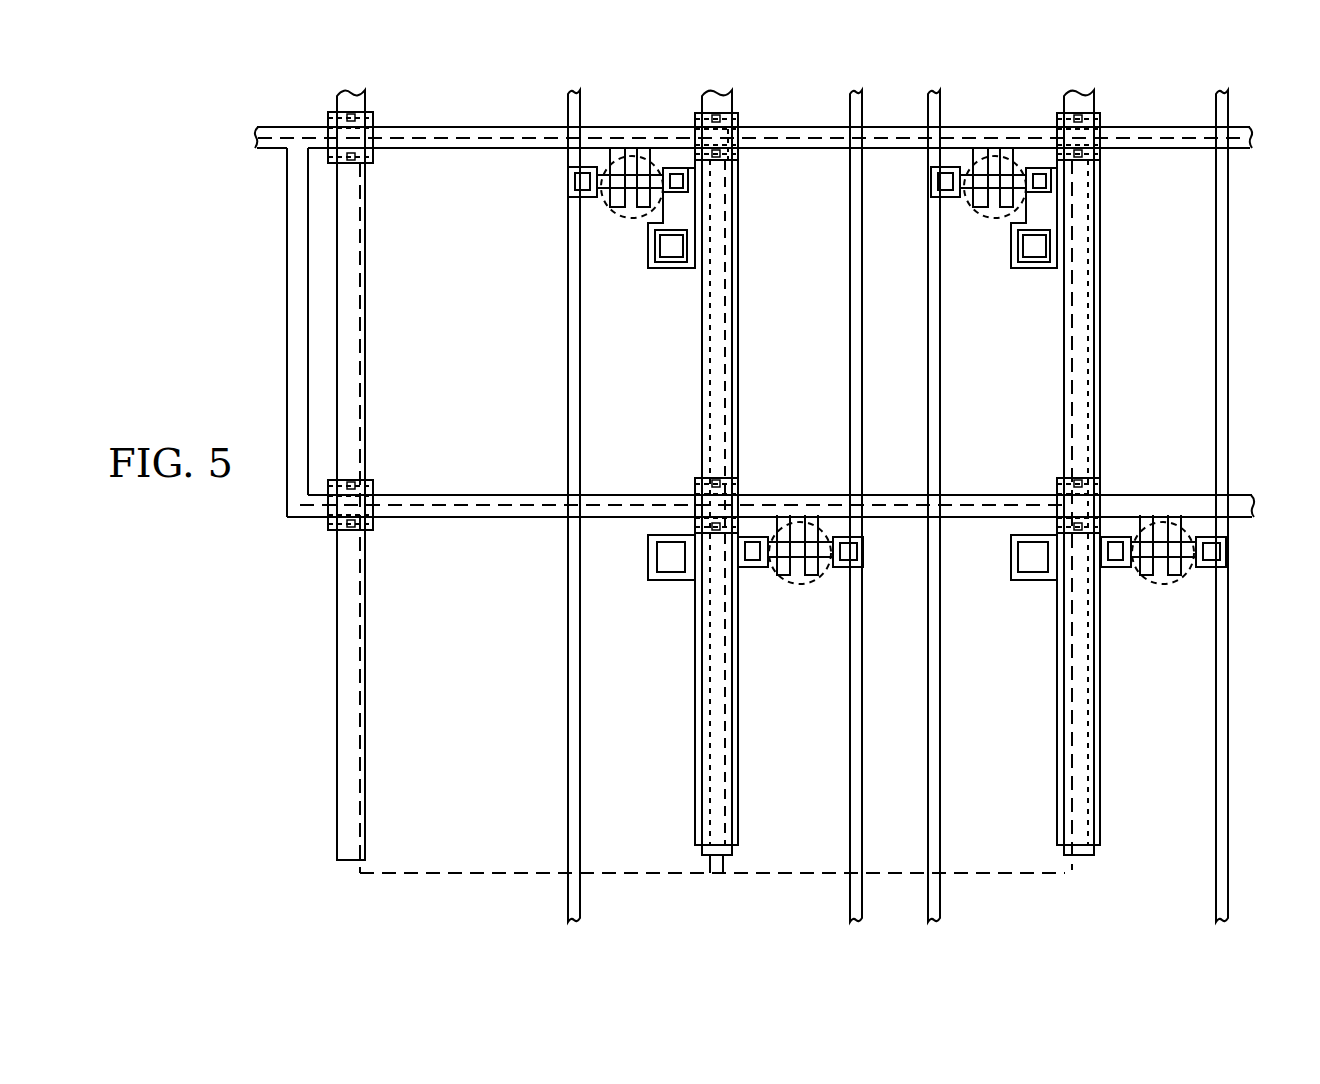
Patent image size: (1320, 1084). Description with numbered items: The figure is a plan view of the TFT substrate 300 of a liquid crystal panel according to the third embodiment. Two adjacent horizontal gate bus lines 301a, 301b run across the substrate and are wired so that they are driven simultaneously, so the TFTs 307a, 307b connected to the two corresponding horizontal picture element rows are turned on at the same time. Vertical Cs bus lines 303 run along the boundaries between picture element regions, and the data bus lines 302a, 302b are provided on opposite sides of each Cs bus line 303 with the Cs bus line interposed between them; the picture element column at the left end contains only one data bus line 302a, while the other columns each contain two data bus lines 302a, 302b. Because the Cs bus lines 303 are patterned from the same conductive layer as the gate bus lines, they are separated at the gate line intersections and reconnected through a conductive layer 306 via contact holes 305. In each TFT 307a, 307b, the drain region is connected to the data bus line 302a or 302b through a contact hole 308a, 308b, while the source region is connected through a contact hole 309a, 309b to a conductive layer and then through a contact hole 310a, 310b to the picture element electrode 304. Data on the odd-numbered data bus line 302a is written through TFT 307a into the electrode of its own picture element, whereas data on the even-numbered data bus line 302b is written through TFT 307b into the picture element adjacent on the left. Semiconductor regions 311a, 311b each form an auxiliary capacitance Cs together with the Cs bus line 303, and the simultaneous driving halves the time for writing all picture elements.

The TFT substrate 300 is at (262, 557).
The gate bus line 301a is at (440, 125).
The gate bus line 301b is at (432, 520).
The data bus line 302a is at (568, 416).
The data bus line 302b is at (855, 820).
The Cs bus line 303 is at (715, 110).
The picture element electrode 304 is at (522, 138).
The contact hole 305 is at (720, 118).
The conductive layer 306 is at (738, 122).
The TFT 307a is at (610, 215).
The TFT 307b is at (803, 583).
The contact hole 308a is at (568, 180).
The contact hole 308b is at (862, 558).
The contact hole 309a is at (672, 168).
The contact hole 309b is at (745, 567).
The contact hole 310a is at (668, 262).
The contact hole 310b is at (665, 560).
The semiconductor region 311a is at (700, 421).
The semiconductor region 311b is at (738, 750).
The auxiliary capacitance Cs is at (722, 312).